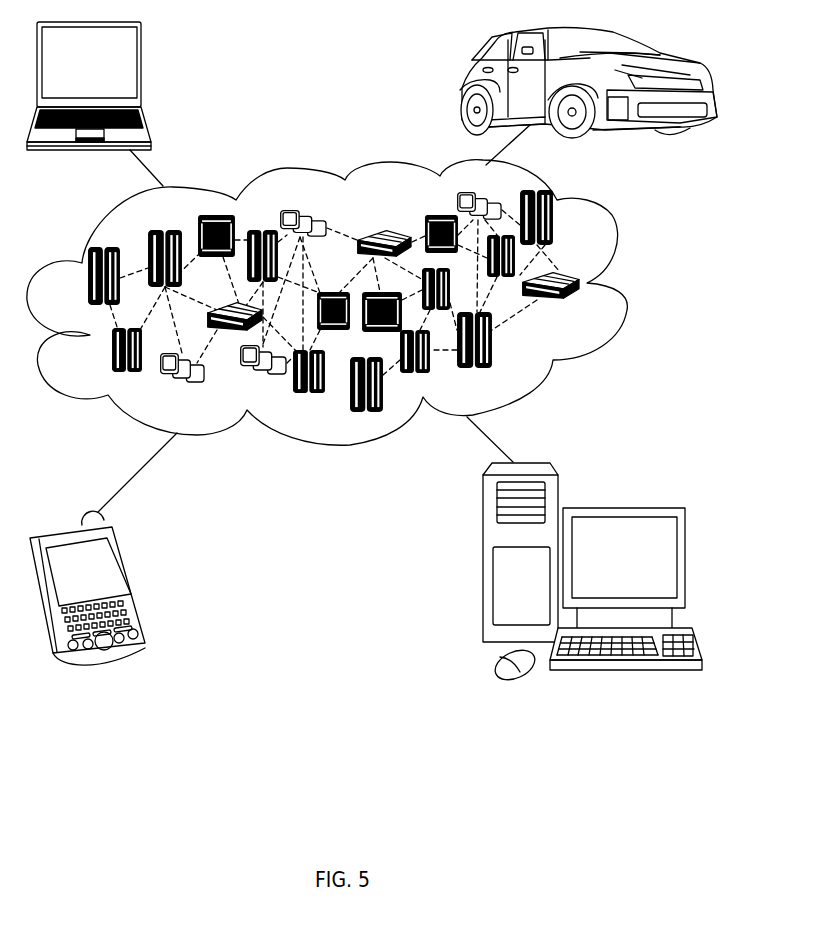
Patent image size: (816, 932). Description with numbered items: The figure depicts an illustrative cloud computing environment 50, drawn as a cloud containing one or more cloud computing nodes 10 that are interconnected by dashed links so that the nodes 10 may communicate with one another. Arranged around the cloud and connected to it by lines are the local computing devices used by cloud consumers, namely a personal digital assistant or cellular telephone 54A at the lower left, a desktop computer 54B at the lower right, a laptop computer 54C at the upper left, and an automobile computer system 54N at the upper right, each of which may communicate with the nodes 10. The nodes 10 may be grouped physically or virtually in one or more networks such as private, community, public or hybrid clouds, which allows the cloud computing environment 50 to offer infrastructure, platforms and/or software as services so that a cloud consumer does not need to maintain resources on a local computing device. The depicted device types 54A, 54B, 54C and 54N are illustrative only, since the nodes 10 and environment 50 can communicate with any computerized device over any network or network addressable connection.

The cloud computing nodes 10 is at (588, 311).
The cloud computing environment 50 is at (623, 284).
The personal digital assistant or cellular telephone 54A is at (131, 578).
The desktop computer 54B is at (622, 508).
The laptop computer 54C is at (141, 72).
The automobile computer system 54N is at (462, 82).